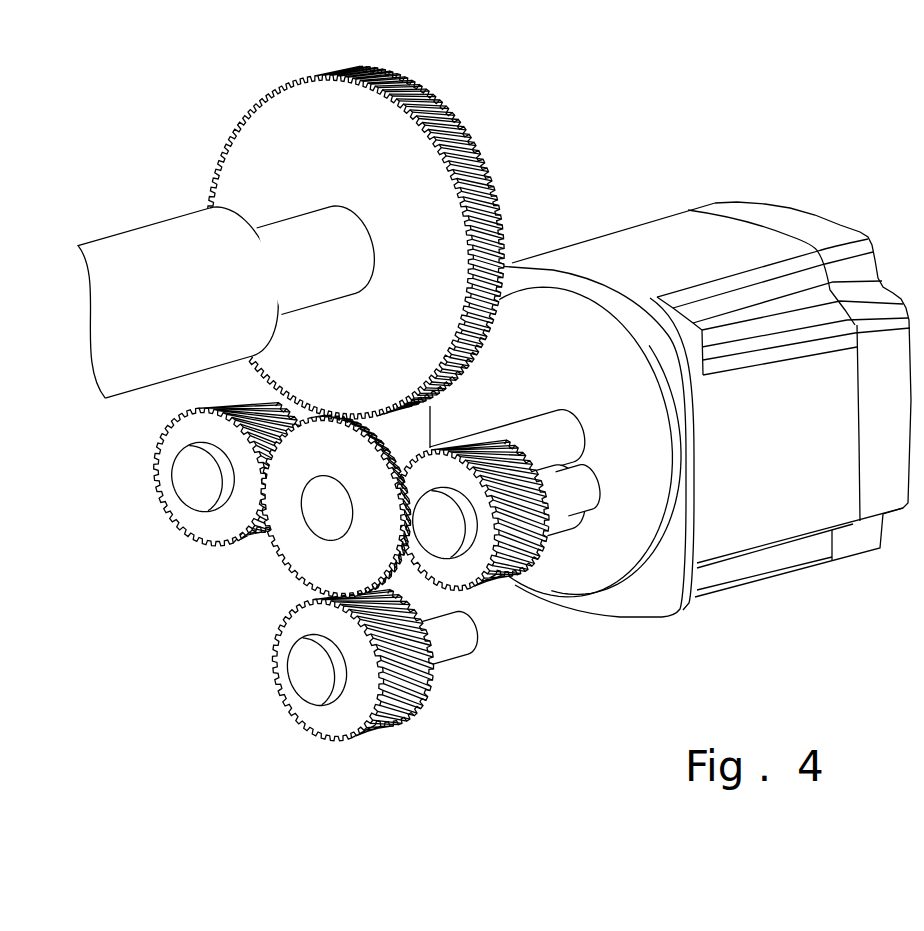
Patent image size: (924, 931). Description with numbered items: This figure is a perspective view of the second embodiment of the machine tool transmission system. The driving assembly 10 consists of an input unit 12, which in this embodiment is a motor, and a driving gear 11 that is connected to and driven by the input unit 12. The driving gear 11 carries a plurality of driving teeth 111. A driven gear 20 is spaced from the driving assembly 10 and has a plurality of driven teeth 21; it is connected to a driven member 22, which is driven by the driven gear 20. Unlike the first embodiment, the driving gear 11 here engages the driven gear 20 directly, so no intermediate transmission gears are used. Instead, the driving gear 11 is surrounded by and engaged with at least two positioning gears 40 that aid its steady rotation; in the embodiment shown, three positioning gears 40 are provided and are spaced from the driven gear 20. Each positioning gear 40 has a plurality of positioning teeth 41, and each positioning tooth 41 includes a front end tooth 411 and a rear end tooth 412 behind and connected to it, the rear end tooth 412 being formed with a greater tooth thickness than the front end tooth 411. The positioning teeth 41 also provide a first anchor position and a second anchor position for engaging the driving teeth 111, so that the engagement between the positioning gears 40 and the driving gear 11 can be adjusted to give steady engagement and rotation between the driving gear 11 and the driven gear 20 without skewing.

The driving assembly 10 is at (669, 383).
The driving gear 11 is at (430, 426).
The input unit 12 is at (585, 342).
The driven gear 20 is at (298, 242).
The driven teeth 21 is at (483, 168).
The driven member 22 is at (150, 245).
The positioning gears 40 is at (343, 568).
The positioning teeth 41 is at (426, 664).
The front end tooth 411 is at (417, 707).
The rear end tooth 412 is at (385, 700).
The driving teeth 111 is at (280, 563).